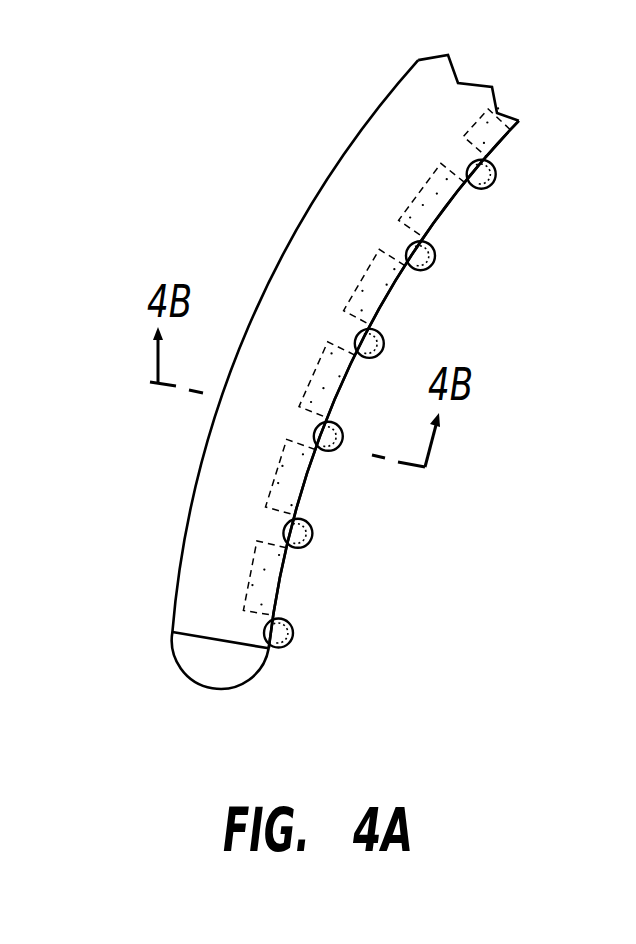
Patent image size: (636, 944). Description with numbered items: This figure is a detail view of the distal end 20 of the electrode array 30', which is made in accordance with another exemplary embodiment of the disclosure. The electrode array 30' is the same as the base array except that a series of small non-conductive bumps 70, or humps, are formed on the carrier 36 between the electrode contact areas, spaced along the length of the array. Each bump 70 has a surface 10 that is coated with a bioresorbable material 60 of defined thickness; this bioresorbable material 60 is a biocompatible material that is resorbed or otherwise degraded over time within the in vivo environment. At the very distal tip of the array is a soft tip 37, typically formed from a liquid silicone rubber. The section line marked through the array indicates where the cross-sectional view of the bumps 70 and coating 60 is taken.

The electrode array 30' is at (329, 351).
The carrier 36 is at (227, 477).
The soft tip 37 is at (210, 667).
The non-conductive bumps 70 is at (482, 173).
The surface 10 is at (493, 188).
The bioresorbable material 60 is at (475, 190).
The distal end 20 is at (472, 603).